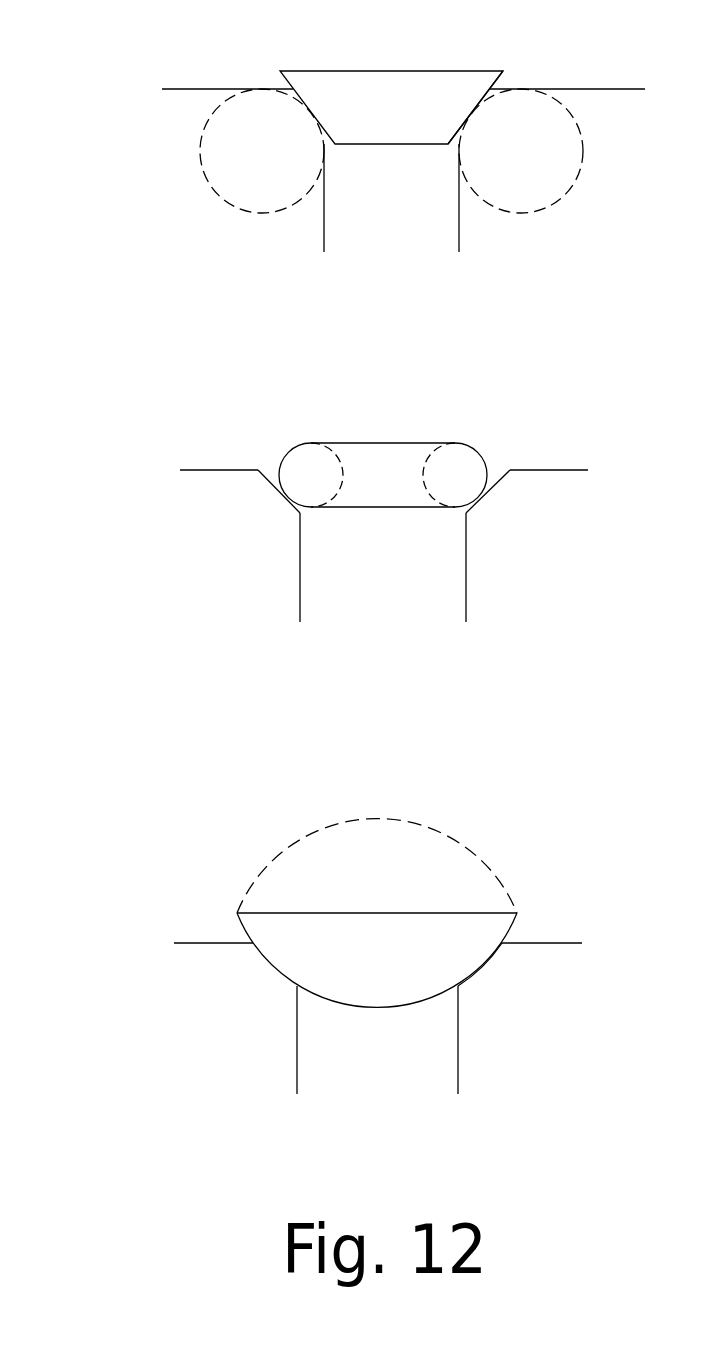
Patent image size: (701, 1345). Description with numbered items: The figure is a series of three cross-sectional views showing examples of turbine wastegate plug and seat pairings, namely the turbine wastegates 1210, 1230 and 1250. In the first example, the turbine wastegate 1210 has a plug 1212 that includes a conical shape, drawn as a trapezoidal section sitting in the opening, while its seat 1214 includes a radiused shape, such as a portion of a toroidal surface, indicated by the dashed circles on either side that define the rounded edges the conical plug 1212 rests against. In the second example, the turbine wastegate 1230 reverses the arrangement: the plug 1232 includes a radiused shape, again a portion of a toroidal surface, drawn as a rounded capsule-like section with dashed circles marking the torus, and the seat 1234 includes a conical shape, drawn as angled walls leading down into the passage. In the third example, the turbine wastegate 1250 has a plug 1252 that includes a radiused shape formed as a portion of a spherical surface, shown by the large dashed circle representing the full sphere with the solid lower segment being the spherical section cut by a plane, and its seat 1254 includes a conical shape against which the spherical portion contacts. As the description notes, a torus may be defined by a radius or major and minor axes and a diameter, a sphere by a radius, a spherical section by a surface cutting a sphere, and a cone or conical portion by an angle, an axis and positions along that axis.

The turbine wastegate 1210 is at (134, 33).
The plug 1212 is at (414, 119).
The seat 1214 is at (477, 108).
The turbine wastegate 1230 is at (146, 399).
The plug 1232 is at (408, 491).
The seat 1234 is at (478, 500).
The turbine wastegate 1250 is at (161, 839).
The plug 1252 is at (408, 961).
The seat 1254 is at (480, 967).